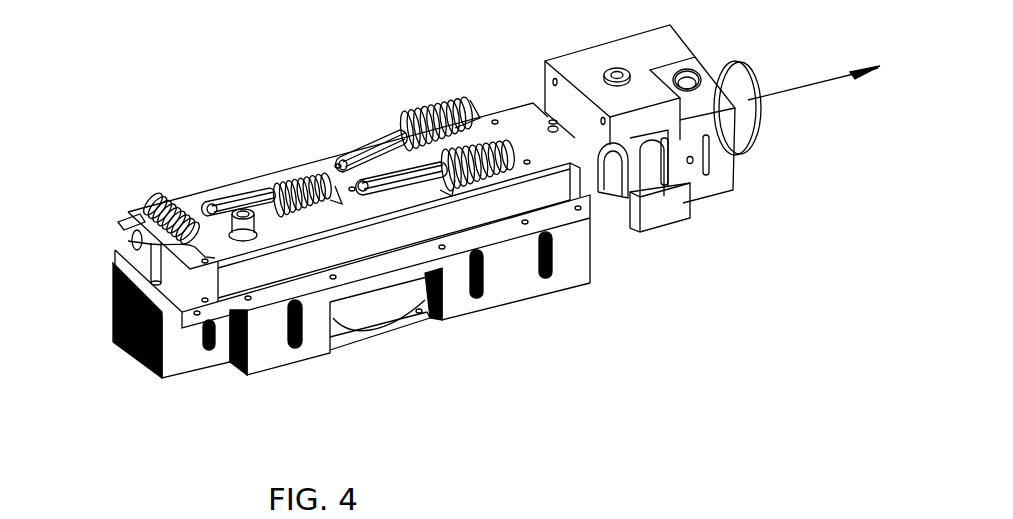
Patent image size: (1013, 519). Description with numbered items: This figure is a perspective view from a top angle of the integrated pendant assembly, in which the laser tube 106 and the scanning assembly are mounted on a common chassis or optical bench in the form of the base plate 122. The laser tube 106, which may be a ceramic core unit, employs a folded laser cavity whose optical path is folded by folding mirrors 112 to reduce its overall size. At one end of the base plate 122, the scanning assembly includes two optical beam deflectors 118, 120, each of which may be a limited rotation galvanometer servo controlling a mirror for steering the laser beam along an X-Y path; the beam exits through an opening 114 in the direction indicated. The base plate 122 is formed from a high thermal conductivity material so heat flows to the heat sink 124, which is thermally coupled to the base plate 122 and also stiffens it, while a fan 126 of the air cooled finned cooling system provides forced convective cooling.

The laser tube 106 is at (352, 158).
The folding mirrors 112 is at (130, 240).
The beam aperture 114 is at (690, 76).
The optical beam deflector 118 is at (665, 230).
The optical beam deflector 120 is at (660, 173).
The base plate 122 is at (192, 320).
The heat sink 124 is at (578, 285).
The fan 126 is at (382, 332).